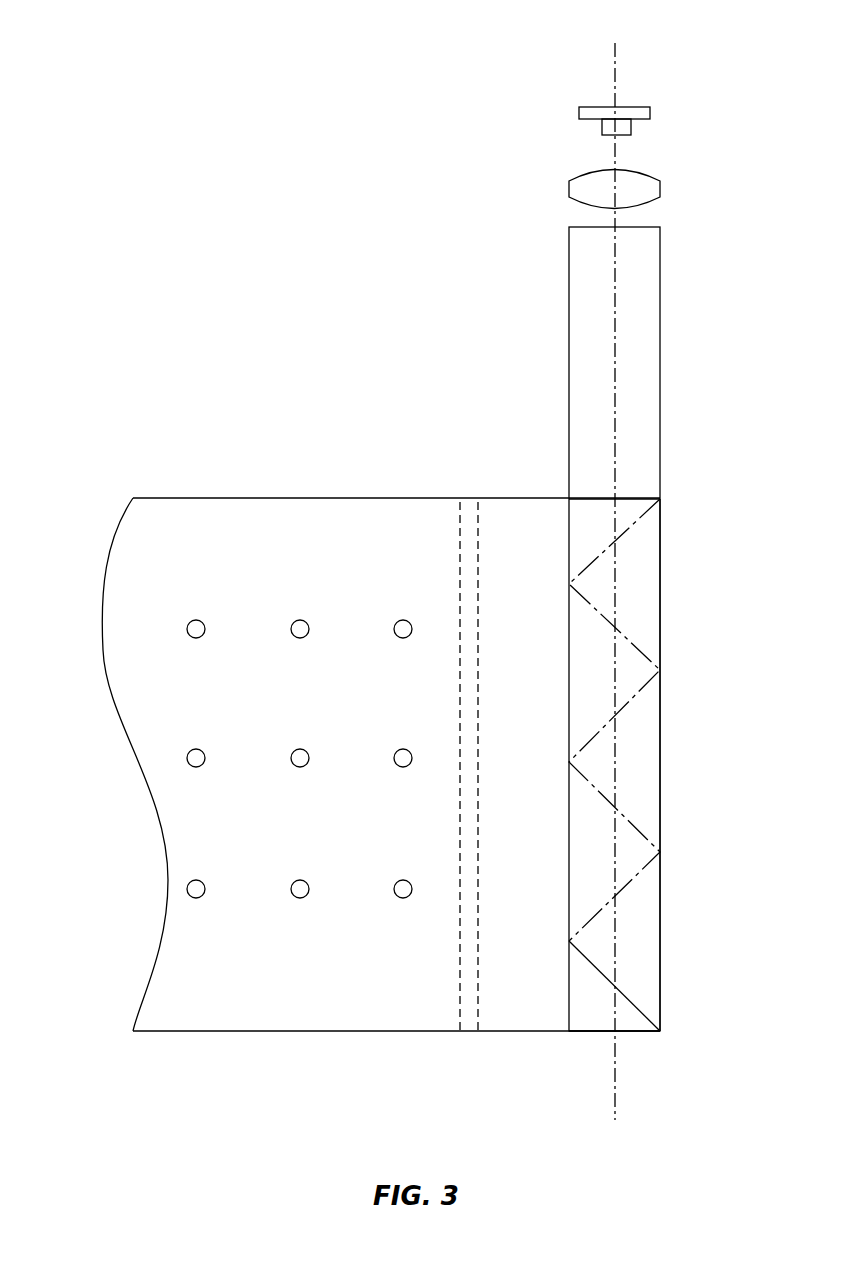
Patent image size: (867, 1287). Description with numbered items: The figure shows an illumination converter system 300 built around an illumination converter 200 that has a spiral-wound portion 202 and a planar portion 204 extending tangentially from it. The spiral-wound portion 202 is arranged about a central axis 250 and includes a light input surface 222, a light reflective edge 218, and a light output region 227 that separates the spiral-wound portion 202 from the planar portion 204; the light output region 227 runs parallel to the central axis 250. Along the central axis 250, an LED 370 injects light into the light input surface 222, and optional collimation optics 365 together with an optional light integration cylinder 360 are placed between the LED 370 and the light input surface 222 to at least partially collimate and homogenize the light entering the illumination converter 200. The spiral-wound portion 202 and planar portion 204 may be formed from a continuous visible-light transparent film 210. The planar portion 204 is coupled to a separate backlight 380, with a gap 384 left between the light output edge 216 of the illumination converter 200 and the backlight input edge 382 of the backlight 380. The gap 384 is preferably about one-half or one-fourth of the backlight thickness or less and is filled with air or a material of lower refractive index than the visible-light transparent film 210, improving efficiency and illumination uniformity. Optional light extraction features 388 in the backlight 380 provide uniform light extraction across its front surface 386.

The illumination converter system 300 is at (186, 161).
The central axis 250 is at (618, 64).
The LED 370 is at (632, 128).
The collimation optics 365 is at (661, 190).
The light integration cylinder 360 is at (661, 349).
The illumination converter 200 is at (680, 578).
The spiral-wound portion 202 is at (675, 802).
The light input surface 222 is at (650, 498).
The light output region 227 is at (661, 738).
The light reflective edge 218 is at (638, 1010).
The visible-light transparent film 210 is at (640, 1032).
The backlight 380 is at (188, 497).
The front surface 386 is at (261, 517).
The backlight input edge 382 is at (458, 520).
The light output edge 216 is at (480, 520).
The light extraction features 388 is at (186, 629).
The gap 384 is at (470, 1020).
The planar portion 204 is at (531, 1036).